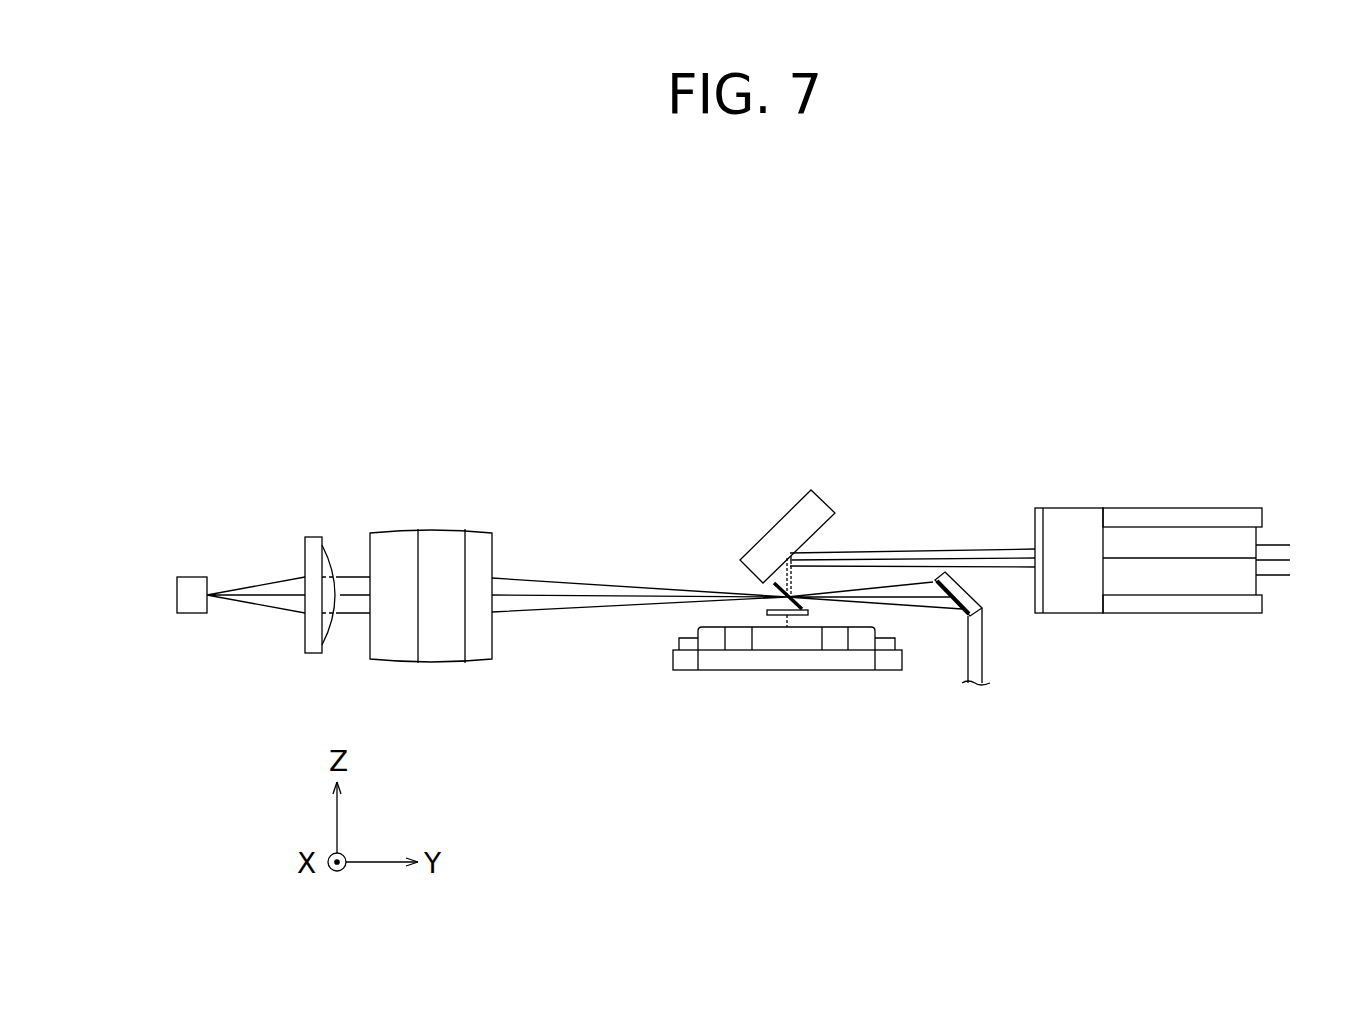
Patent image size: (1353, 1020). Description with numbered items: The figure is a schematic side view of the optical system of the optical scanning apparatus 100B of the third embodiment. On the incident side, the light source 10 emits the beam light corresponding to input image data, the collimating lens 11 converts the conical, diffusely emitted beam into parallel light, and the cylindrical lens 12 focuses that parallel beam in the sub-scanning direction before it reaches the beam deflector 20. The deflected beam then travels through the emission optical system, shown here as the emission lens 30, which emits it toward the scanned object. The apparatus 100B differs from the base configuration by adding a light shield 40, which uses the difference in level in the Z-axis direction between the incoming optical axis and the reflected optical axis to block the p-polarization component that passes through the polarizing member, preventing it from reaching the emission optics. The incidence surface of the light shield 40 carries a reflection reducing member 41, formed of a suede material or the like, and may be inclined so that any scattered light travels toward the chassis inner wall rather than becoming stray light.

The optical scanning apparatus 100B is at (976, 402).
The light source 10 is at (190, 586).
The collimating lens 11 is at (310, 536).
The cylindrical lens 12 is at (430, 530).
The beam deflector 20 is at (752, 468).
The emission lens 30 is at (1158, 508).
The light shield 40 is at (992, 610).
The reflection reducing member 41 is at (955, 605).